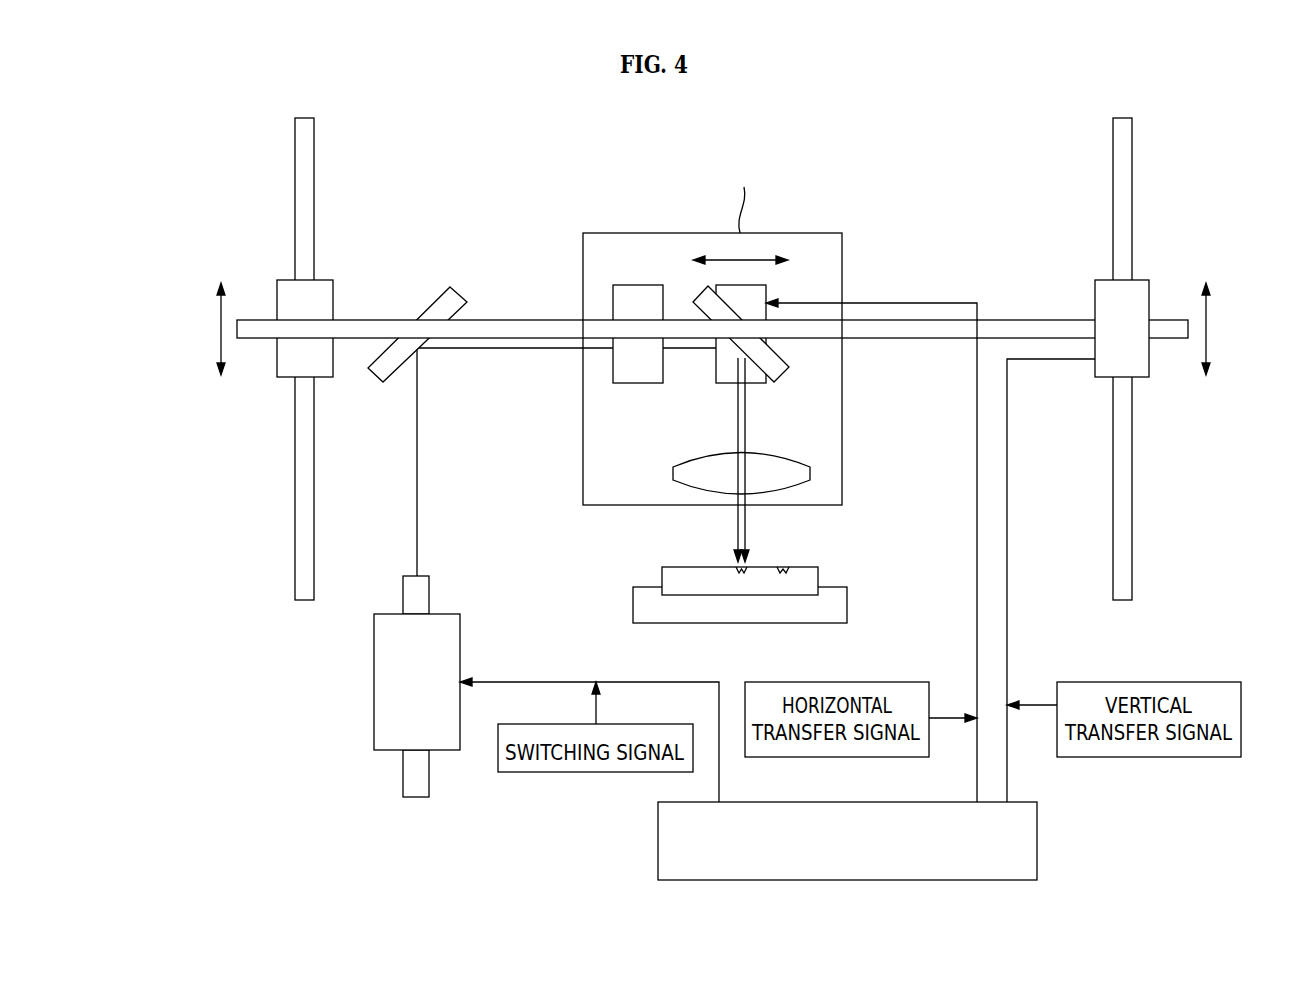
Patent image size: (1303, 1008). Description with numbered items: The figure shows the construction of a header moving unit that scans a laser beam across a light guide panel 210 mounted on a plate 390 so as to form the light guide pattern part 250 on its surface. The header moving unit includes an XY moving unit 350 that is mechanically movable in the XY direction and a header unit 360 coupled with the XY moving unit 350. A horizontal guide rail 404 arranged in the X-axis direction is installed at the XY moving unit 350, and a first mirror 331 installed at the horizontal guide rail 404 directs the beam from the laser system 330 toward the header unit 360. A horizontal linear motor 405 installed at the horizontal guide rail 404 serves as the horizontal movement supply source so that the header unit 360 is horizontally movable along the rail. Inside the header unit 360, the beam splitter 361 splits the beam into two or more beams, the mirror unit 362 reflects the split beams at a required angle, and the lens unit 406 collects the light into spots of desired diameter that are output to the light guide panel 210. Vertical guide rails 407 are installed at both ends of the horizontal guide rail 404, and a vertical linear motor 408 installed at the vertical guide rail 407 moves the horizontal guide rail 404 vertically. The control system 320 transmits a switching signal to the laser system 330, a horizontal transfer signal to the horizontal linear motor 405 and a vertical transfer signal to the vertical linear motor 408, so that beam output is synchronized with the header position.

The XY moving unit 350 is at (236, 182).
The first mirror 331 is at (432, 300).
The header unit 360 is at (807, 233).
The beam splitter 361 is at (637, 285).
The horizontal linear motor 405 is at (766, 293).
The mirror unit 362 is at (789, 363).
The lens unit 406 is at (684, 458).
The horizontal guide rail 404 is at (1035, 320).
The vertical guide rail 407 is at (1133, 143).
The vertical linear motor 408 is at (1140, 280).
The light guide pattern part 250 is at (748, 565).
The light guide panel 210 is at (820, 577).
The plate 390 is at (848, 603).
The laser system 330 is at (374, 680).
The control system 320 is at (1038, 840).